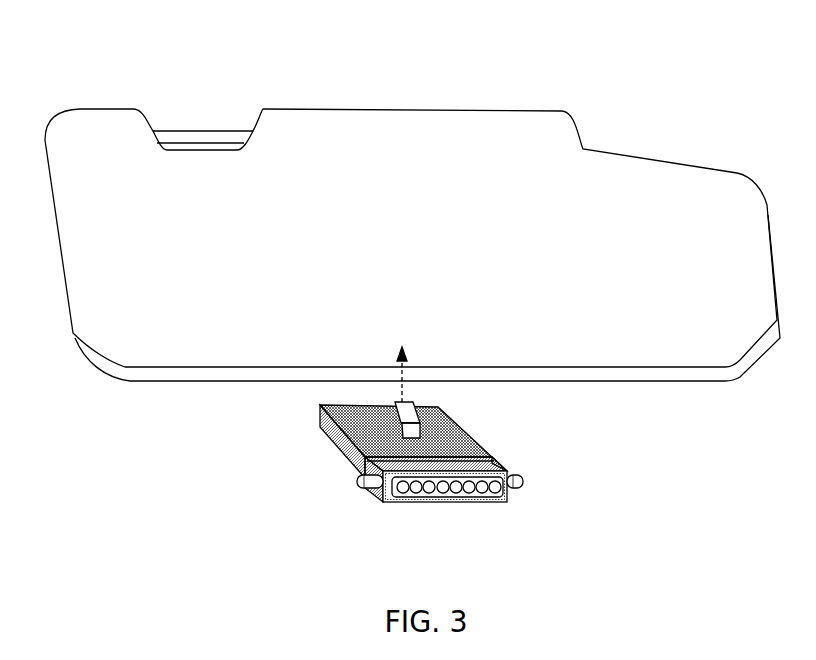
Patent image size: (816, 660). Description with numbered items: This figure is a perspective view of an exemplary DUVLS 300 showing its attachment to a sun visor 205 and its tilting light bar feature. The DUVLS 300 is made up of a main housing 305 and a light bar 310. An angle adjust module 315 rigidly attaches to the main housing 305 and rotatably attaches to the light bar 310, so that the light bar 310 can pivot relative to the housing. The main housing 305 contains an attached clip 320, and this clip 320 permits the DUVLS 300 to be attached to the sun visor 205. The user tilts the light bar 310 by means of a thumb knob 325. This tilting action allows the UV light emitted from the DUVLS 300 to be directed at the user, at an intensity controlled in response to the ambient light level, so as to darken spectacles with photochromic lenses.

The sun visor 205 is at (411, 110).
The DUVLS 300 is at (528, 443).
The main housing 305 is at (325, 444).
The light bar 310 is at (410, 503).
The angle adjust module 315 is at (357, 479).
The clip 320 is at (420, 427).
The thumb knob 325 is at (523, 479).